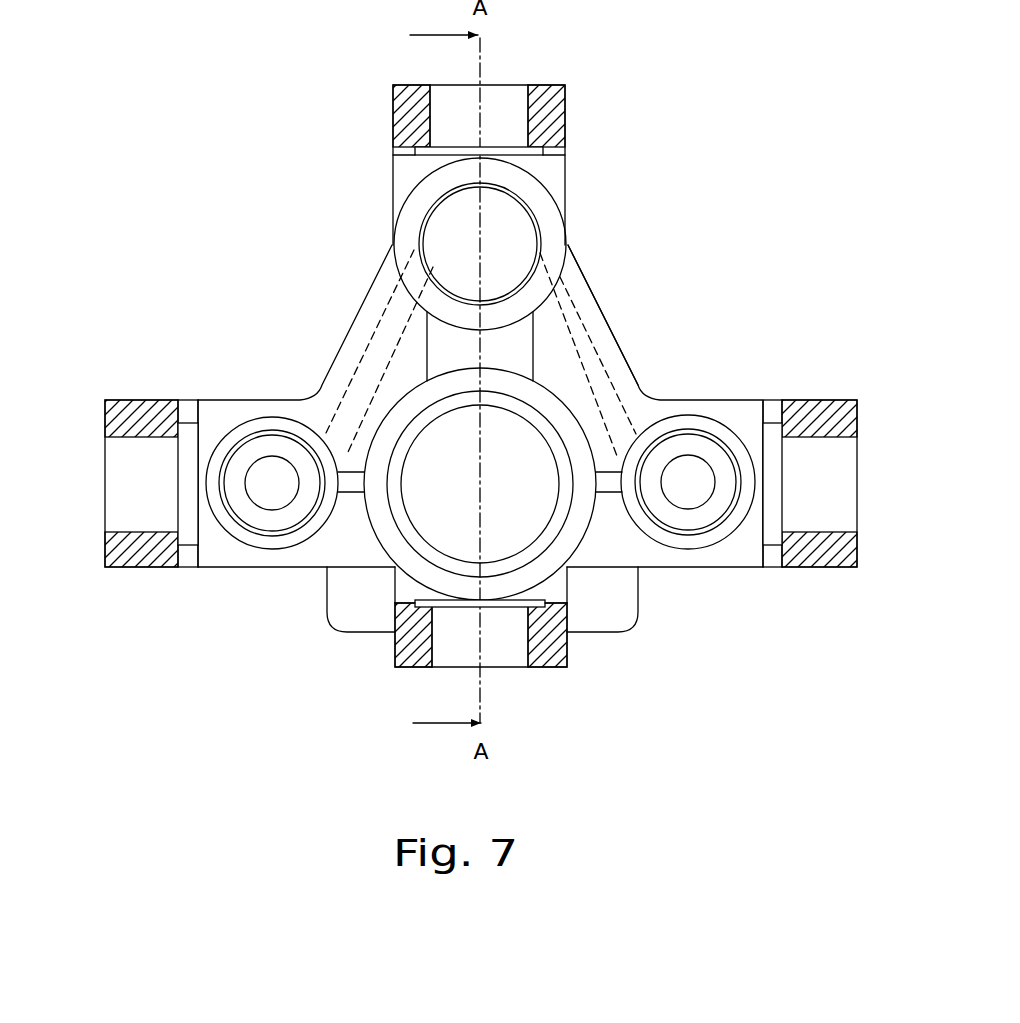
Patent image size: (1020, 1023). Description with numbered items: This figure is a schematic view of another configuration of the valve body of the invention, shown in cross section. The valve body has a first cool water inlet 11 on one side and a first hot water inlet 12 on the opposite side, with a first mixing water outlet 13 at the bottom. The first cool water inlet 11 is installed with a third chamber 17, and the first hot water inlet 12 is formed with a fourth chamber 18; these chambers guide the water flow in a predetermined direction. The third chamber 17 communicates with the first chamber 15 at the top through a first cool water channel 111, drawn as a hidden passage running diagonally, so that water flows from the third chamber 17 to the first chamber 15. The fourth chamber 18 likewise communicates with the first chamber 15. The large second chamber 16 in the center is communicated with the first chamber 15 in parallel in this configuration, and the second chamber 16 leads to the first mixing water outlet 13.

The first cool water inlet 11 is at (840, 473).
The first hot water inlet 12 is at (117, 480).
The first mixing water outlet 13 is at (517, 647).
The first chamber 15 is at (520, 220).
The second chamber 16 is at (512, 528).
The third chamber 17 is at (690, 522).
The fourth chamber 18 is at (267, 523).
The first cool water channel 111 is at (588, 340).